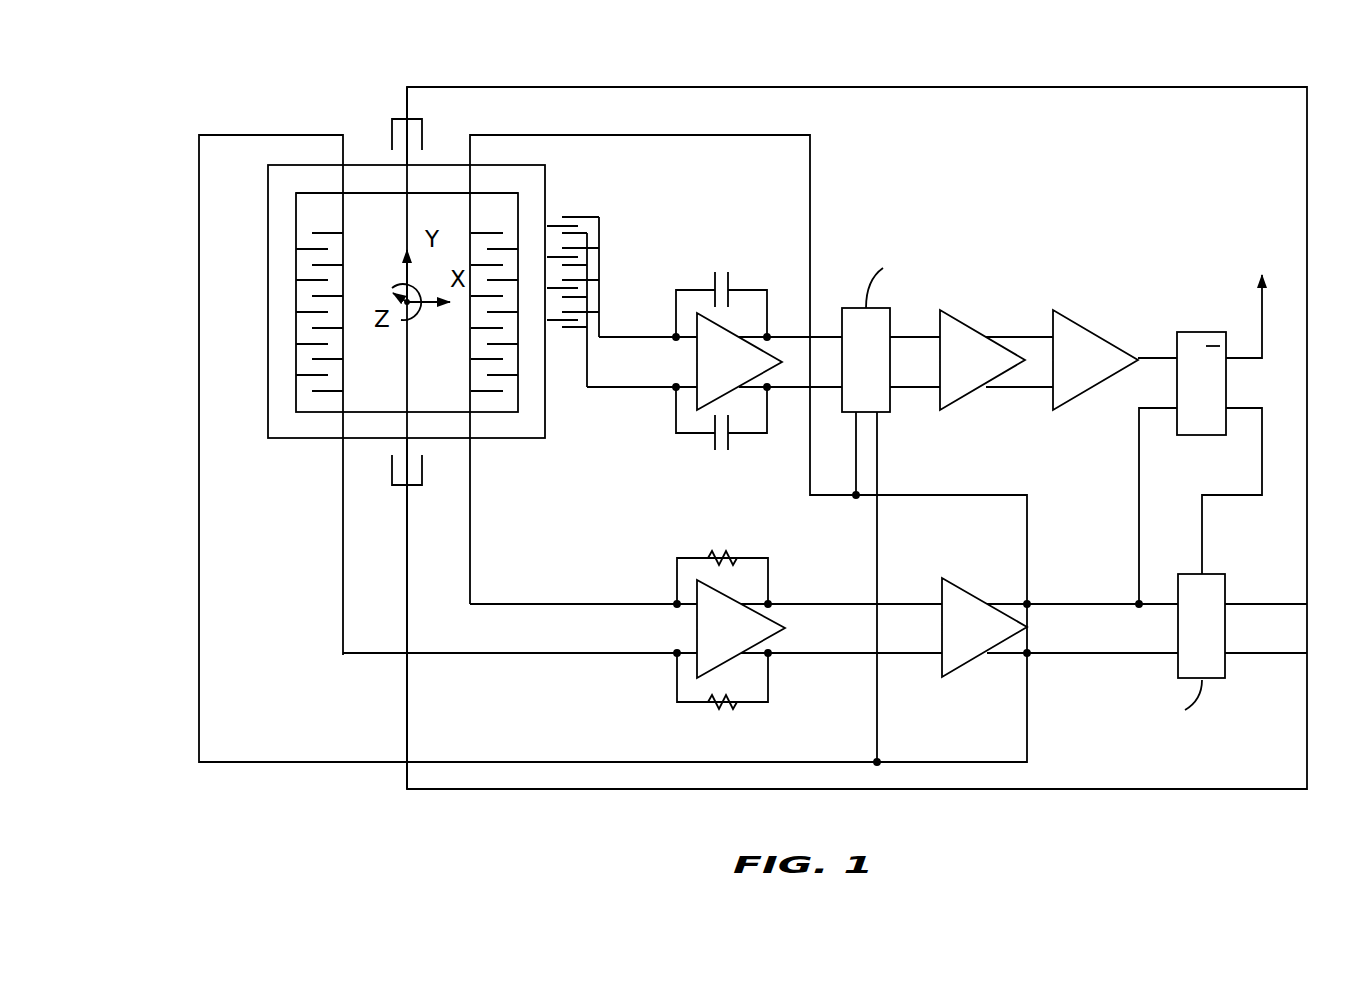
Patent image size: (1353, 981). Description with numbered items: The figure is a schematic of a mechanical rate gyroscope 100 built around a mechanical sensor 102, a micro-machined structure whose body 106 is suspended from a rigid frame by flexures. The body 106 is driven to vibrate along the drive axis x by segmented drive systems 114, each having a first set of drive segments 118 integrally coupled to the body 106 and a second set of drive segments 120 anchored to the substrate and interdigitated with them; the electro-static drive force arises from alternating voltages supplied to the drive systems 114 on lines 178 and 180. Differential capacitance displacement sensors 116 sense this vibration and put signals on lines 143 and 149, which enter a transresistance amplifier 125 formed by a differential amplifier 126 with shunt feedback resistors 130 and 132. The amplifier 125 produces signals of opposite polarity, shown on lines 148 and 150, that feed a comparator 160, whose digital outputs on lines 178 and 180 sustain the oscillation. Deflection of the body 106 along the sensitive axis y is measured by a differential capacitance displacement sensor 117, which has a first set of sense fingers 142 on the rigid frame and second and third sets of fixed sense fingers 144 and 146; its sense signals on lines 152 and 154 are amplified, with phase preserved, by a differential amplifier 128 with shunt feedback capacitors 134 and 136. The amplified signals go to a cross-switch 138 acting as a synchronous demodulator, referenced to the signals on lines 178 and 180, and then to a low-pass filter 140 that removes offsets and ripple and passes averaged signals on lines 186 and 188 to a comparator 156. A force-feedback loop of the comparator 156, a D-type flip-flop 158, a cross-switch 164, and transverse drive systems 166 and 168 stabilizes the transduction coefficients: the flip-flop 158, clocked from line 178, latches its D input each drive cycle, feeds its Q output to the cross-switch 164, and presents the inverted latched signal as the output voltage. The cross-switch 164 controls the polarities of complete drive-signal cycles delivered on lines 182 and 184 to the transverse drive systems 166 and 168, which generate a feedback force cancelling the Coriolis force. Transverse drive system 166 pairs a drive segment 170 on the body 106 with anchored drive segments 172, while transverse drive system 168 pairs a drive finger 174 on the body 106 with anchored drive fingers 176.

The mechanical rate gyroscope 100 is at (1150, 66).
The mechanical sensor 102 is at (501, 444).
The body 106 is at (307, 423).
The segmented drive systems 114 is at (348, 212).
The differential capacitance displacement sensors 116 is at (348, 388).
The differential capacitance displacement sensor 117 is at (609, 265).
The first set of drive segments 118 is at (307, 246).
The second set of drive segments 120 is at (348, 360).
The transresistance amplifier 125 is at (651, 595).
The differential amplifier 126 is at (713, 643).
The differential amplifier 128 is at (713, 375).
The shunt feedback resistor 130 is at (722, 563).
The shunt feedback resistor 132 is at (722, 697).
The shunt feedback capacitor 134 is at (721, 289).
The shunt feedback capacitor 136 is at (721, 435).
The cross-switch 138 is at (849, 375).
The low-pass filter 140 is at (956, 375).
The first set of sense fingers 142 is at (554, 324).
The line 143 is at (560, 603).
The second set of sense fingers 144 is at (587, 213).
The third set of sense fingers 146 is at (570, 331).
The output line 148 is at (862, 652).
The line 149 is at (560, 652).
The output line 150 is at (862, 603).
The line 152 is at (625, 390).
The line 154 is at (625, 335).
The comparator 156 is at (1070, 375).
The D-type flip-flop 158 is at (1184, 395).
The comparator 160 is at (958, 644).
The cross-switch 164 is at (1185, 640).
The transverse drive system 166 is at (407, 82).
The transverse drive system 168 is at (419, 498).
The drive segment 170 is at (408, 157).
The drive segments 172 is at (389, 130).
The drive finger 174 is at (409, 447).
The drive fingers 176 is at (389, 476).
The line 178 is at (1117, 602).
The line 180 is at (1117, 652).
The line 182 is at (1033, 88).
The line 184 is at (406, 727).
The line 186 is at (1008, 336).
The line 188 is at (1008, 388).